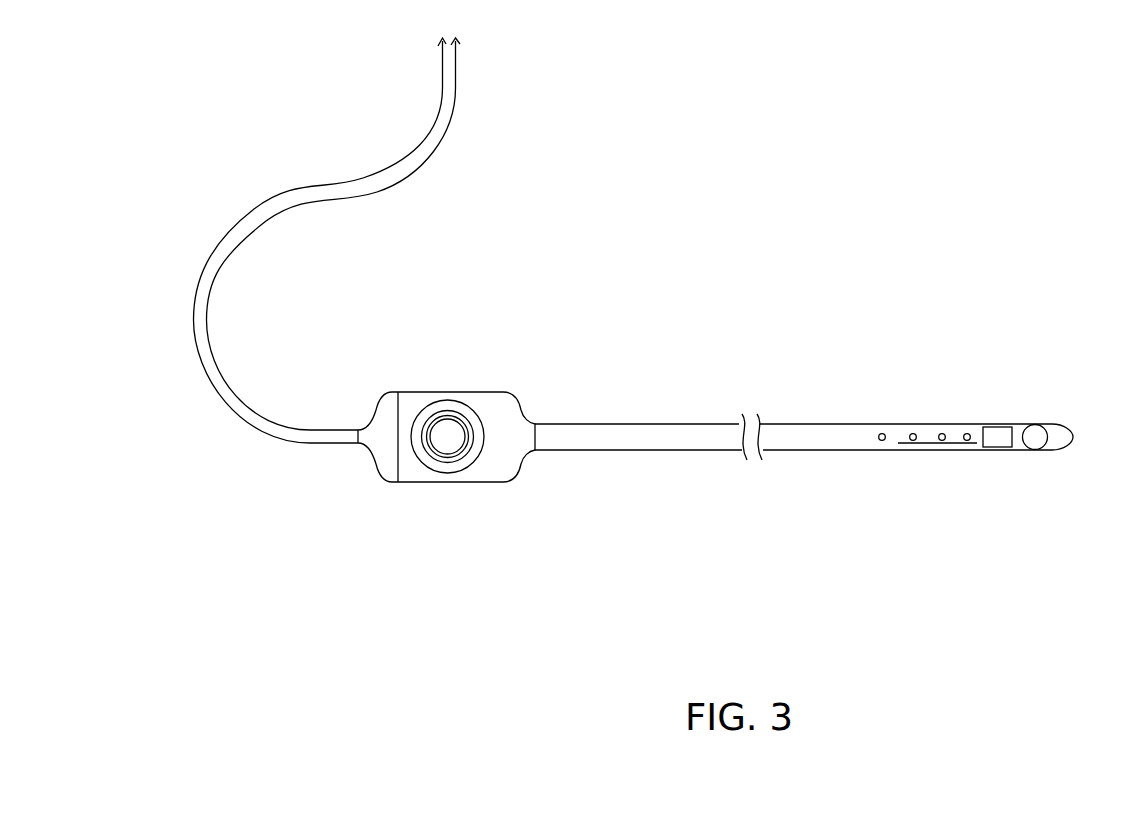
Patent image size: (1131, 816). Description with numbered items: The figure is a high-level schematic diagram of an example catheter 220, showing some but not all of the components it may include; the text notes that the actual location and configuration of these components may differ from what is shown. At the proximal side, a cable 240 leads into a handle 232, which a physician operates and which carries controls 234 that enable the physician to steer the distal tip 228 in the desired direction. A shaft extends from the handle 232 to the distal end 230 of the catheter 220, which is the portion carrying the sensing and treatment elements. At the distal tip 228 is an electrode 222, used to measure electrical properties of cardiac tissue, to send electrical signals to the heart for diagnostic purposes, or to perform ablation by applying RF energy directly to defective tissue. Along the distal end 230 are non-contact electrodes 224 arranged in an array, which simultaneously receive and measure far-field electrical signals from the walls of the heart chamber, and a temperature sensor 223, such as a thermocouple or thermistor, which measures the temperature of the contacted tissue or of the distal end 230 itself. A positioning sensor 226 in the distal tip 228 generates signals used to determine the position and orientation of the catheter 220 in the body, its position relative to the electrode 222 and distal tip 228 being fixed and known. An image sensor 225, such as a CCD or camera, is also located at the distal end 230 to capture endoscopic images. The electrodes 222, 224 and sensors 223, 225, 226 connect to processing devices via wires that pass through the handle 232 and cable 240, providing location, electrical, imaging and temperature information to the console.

The catheter 220 is at (931, 115).
The cable 240 is at (448, 97).
The handle 232 is at (467, 485).
The controls 234 is at (438, 402).
The distal end 230 is at (1072, 507).
The electrode 222 is at (1035, 449).
The distal tip 228 is at (1073, 440).
The non-contact electrodes 224 is at (913, 433).
The temperature sensor 223 is at (932, 445).
The positioning sensor 226 is at (998, 427).
The image sensor 225 is at (1035, 430).